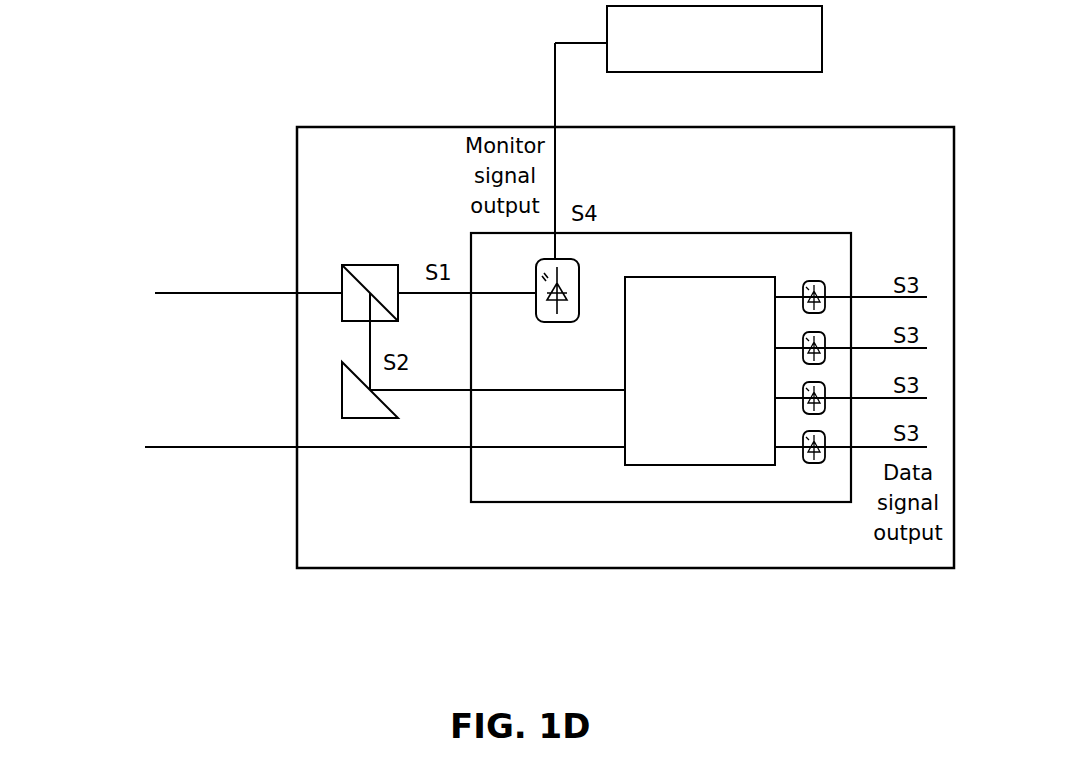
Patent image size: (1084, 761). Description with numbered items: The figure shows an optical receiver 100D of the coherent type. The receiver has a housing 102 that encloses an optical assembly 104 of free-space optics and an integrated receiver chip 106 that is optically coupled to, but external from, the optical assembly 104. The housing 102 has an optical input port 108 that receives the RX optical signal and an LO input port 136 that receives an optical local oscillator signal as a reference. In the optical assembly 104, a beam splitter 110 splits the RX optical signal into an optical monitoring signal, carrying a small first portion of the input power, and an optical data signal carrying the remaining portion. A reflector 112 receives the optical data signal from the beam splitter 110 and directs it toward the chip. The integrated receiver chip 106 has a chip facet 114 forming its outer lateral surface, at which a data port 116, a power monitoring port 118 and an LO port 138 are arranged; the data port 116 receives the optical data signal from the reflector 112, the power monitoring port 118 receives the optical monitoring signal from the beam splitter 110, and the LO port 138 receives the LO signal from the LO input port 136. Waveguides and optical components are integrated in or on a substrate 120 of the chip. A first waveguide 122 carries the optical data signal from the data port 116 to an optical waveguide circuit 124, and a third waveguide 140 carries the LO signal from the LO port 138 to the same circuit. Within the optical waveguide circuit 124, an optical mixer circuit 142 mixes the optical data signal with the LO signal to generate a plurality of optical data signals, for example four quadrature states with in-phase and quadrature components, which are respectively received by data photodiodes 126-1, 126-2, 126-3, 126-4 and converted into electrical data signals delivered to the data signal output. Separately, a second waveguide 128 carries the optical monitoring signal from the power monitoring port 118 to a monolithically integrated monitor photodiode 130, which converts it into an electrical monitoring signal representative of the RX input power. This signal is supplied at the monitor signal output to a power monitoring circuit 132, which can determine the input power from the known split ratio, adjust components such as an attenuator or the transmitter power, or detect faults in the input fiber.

The optical receiver 100D is at (172, 50).
The housing 102 is at (675, 127).
The optical assembly 104 is at (392, 170).
The integrated receiver chip 106 is at (665, 233).
The optical input port 108 is at (290, 299).
The beam splitter 110 is at (365, 265).
The reflector 112 is at (340, 392).
The chip facet 114 is at (800, 230).
The data port 116 is at (462, 395).
The power monitoring port 118 is at (462, 298).
The substrate 120 is at (822, 250).
The first waveguide 122 is at (531, 392).
The optical waveguide circuit 124 is at (678, 262).
The data photodiode 126-1 is at (822, 290).
The data photodiode 126-2 is at (822, 341).
The data photodiode 126-3 is at (822, 391).
The data photodiode 126-4 is at (822, 440).
The second waveguide 128 is at (487, 295).
The monitor photodiode 130 is at (557, 322).
The power monitoring circuit 132 is at (822, 42).
The LO input port 136 is at (290, 453).
The LO port 138 is at (463, 452).
The third waveguide 140 is at (531, 445).
The optical mixer circuit 142 is at (700, 277).